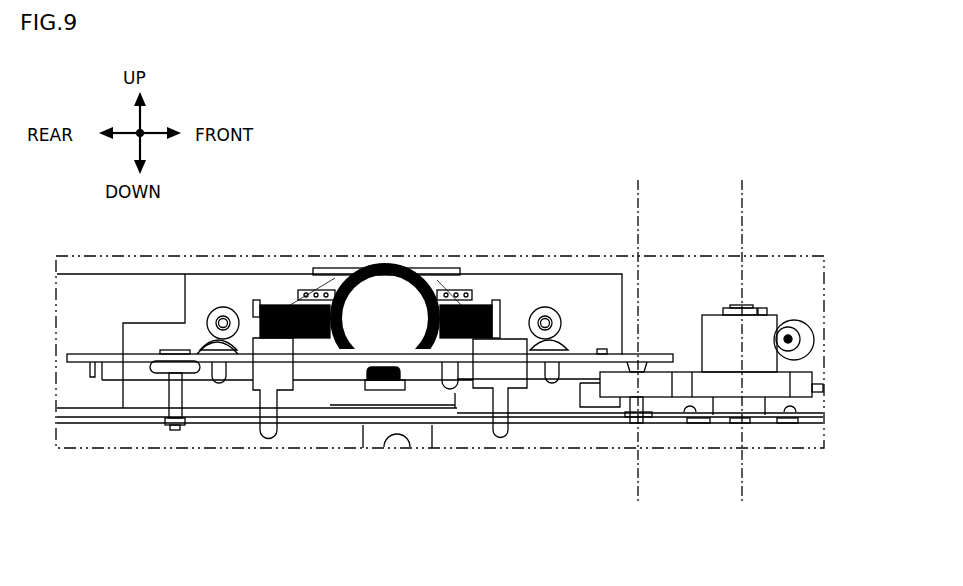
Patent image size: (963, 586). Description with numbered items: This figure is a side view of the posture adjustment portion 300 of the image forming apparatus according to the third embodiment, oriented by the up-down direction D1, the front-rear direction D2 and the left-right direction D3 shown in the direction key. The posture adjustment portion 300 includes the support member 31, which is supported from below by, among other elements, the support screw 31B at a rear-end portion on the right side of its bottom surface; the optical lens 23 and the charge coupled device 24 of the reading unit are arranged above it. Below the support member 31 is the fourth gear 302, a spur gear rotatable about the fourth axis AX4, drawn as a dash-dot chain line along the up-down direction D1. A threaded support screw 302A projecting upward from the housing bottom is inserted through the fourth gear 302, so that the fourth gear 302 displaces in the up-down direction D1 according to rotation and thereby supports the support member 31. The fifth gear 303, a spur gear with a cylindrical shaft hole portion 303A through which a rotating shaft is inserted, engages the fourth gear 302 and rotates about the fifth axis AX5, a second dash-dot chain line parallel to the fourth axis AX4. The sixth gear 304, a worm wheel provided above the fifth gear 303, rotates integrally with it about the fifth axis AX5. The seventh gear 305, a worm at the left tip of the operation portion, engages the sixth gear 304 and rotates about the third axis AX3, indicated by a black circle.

The optical lens 23 is at (387, 262).
The charge coupled device 24 is at (277, 300).
The support member 31 is at (108, 354).
The support screw 31B is at (175, 352).
The posture adjustment portion 300 is at (592, 491).
The fourth gear 302 is at (598, 387).
The support screw 302A is at (643, 405).
The fifth gear 303 is at (823, 388).
The cylindrical shaft hole portion 303A is at (767, 402).
The sixth gear 304 is at (702, 337).
The seventh gear 305 is at (800, 337).
The third axis AX3 is at (788, 336).
The fourth axis AX4 is at (637, 208).
The fifth axis AX5 is at (744, 208).
The up-down direction D1 is at (142, 120).
The front-rear direction D2 is at (153, 138).
The left-right direction D3 is at (135, 136).